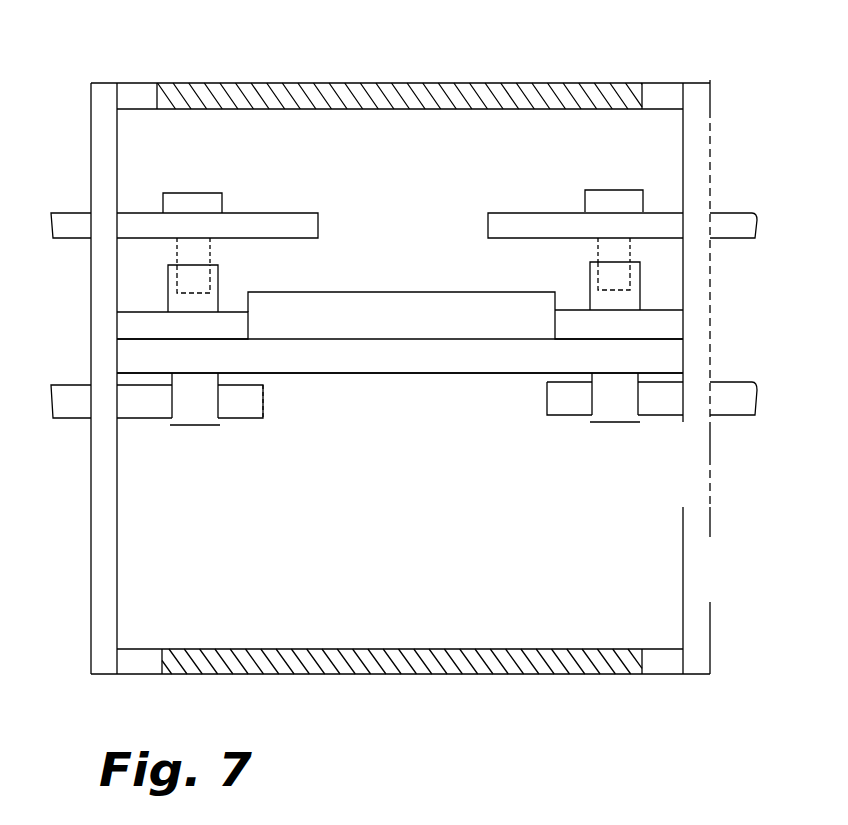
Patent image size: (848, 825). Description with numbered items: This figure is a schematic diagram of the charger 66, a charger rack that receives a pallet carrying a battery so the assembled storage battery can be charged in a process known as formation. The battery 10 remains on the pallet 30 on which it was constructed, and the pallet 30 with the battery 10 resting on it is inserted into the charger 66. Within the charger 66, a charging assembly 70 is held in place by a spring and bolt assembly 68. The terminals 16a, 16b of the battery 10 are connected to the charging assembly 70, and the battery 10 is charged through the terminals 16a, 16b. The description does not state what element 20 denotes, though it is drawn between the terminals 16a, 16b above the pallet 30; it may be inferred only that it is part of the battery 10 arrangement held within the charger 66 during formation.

The battery 10 is at (400, 401).
The terminal 16a is at (128, 324).
The terminal 16b is at (672, 322).
The substrate 20 is at (372, 292).
The pallet 30 is at (395, 358).
The charger 66 is at (78, 82).
The spring and bolt assembly 68 is at (66, 224).
The charging assembly 70 is at (193, 413).